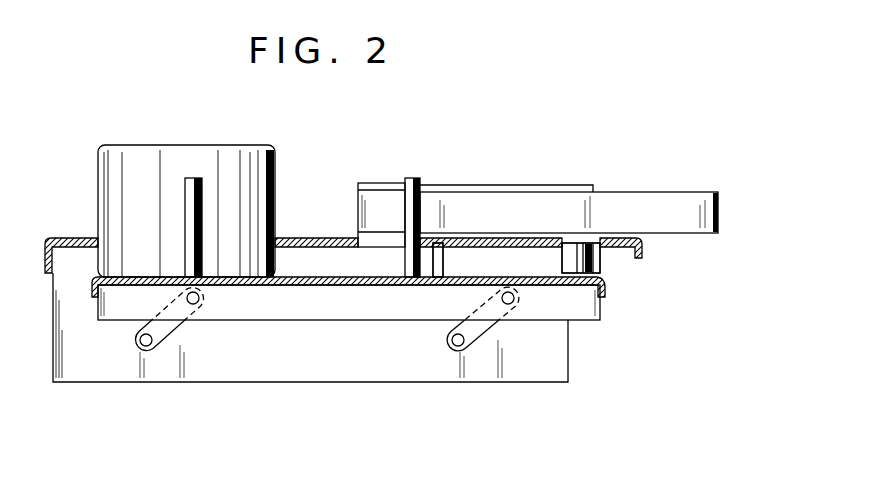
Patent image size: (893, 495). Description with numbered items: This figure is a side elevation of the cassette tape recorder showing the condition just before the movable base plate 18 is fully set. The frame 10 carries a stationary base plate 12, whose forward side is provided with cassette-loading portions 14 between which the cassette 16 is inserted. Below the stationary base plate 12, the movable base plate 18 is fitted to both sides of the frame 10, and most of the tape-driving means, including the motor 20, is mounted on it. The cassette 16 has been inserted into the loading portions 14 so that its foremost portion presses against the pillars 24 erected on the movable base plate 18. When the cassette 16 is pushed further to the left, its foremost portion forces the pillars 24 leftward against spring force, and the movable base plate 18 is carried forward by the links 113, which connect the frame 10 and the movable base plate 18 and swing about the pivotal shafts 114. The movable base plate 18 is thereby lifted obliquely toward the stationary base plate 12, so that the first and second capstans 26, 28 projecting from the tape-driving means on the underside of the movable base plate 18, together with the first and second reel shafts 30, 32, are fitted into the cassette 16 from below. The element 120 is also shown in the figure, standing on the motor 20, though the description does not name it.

The frame 10 is at (337, 383).
The stationary base plate 12 is at (319, 238).
The cassette-loading portions 14 is at (373, 183).
The cassette 16 is at (652, 200).
The movable base plate 18 is at (275, 321).
The motor 20 is at (137, 160).
The pillars 24 is at (412, 178).
The first capstan 26 is at (446, 258).
The second capstan 28 is at (438, 260).
The first reel shaft 30 is at (601, 262).
The second reel shaft 32 is at (581, 258).
The links 113 is at (187, 320).
The pivotal shafts 114 is at (138, 340).
The pin 120 is at (193, 177).